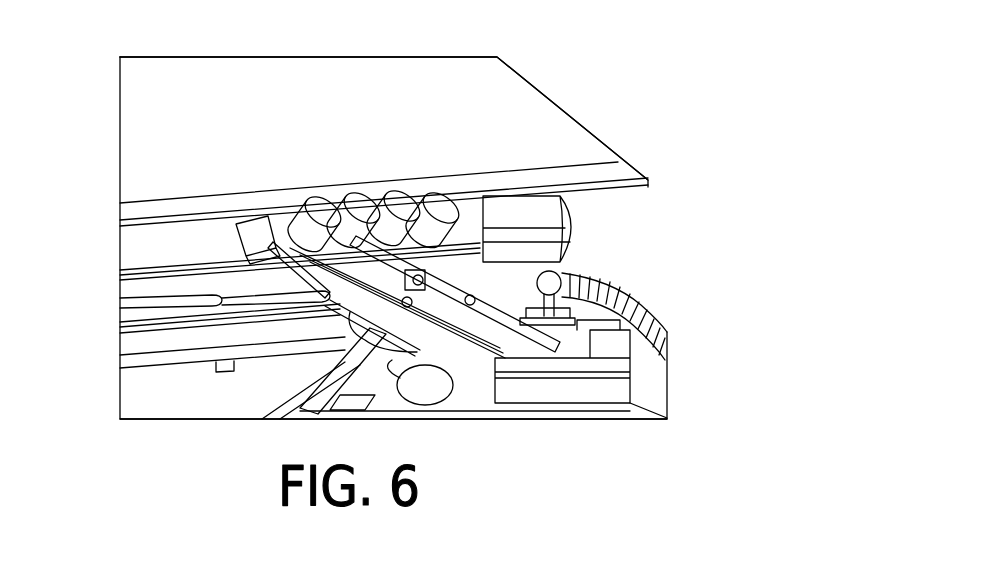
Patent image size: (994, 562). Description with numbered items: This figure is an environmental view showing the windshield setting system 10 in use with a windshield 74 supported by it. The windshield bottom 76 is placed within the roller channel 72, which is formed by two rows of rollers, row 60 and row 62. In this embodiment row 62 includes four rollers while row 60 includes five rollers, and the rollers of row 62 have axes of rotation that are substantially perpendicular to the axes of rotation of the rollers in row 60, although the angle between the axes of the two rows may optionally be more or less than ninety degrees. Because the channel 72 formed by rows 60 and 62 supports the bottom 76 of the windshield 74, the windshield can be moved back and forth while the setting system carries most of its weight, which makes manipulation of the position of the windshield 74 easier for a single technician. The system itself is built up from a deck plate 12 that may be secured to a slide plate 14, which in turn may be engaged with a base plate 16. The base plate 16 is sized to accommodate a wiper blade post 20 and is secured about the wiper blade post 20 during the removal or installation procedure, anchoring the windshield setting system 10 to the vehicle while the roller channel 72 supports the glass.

The windshield setting system 10 is at (98, 266).
The deck plate 12 is at (570, 262).
The slide plate 14 is at (135, 340).
The base plate 16 is at (365, 338).
The wiper blade post 20 is at (384, 367).
The row of rollers 60 is at (224, 228).
The row of rollers 62 is at (493, 217).
The roller channel 72 is at (273, 197).
The windshield 74 is at (452, 88).
The windshield bottom 76 is at (524, 190).